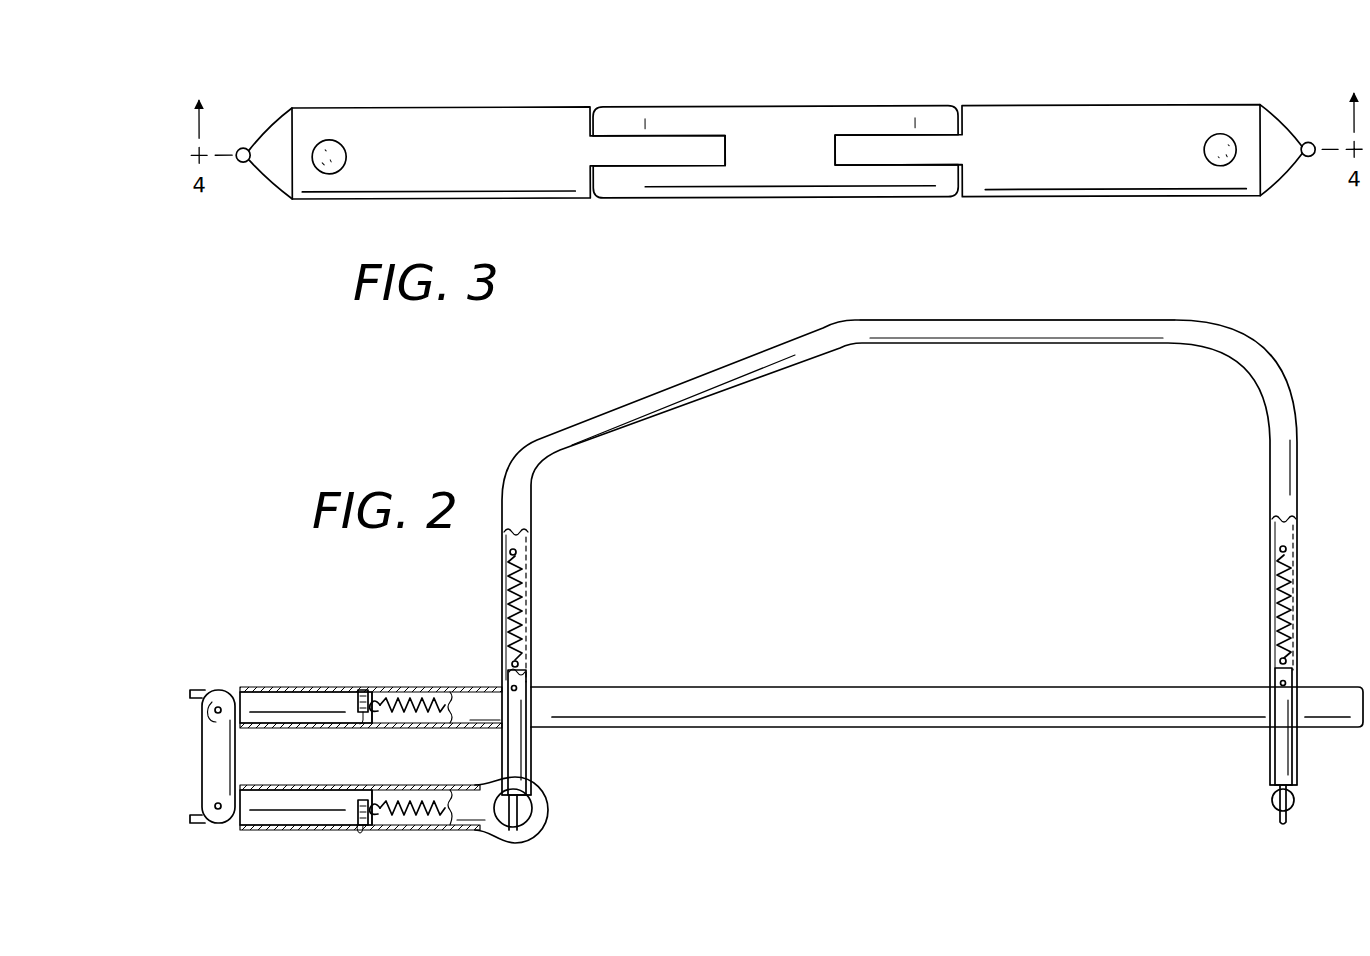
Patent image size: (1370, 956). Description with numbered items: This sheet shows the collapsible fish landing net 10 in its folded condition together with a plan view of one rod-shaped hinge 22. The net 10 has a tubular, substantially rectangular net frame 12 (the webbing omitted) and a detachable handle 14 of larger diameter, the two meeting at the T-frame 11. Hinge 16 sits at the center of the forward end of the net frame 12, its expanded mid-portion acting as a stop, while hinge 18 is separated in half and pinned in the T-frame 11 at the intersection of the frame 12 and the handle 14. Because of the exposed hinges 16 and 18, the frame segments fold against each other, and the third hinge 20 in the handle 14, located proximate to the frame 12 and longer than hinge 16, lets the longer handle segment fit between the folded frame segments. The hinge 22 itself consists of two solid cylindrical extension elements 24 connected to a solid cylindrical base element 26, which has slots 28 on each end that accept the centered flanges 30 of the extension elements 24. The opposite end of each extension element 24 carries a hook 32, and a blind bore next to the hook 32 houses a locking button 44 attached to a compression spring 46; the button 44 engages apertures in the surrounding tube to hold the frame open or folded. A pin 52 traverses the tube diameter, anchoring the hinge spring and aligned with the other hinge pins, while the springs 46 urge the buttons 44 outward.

In FIG. 2, the fish landing net 10 is at (520, 440).
In FIG. 2, the T-frame 11 is at (537, 808).
In FIG. 2, the net frame 12 is at (1000, 306).
In FIG. 2, the handle 14 is at (870, 698).
In FIG. 2, the hinge 16 is at (1310, 766).
In FIG. 2, the hinge 18 is at (550, 782).
In FIG. 2, the hinge 20 is at (242, 757).
In FIG. 3, the rod-shaped hinge 22 is at (838, 56).
In FIG. 3, the extension element 24 is at (445, 107).
In FIG. 2, the extension element 24 is at (518, 757).
In FIG. 3, the base element 26 is at (765, 107).
In FIG. 2, the base element 26 is at (220, 690).
In FIG. 3, the slot 28 is at (729, 148).
In FIG. 3, the centered flange 30 is at (634, 152).
In FIG. 3, the hook 32 is at (240, 149).
In FIG. 2, the hook 32 is at (388, 710).
In FIG. 3, the locking button 44 is at (329, 141).
In FIG. 2, the locking button 44 is at (363, 690).
In FIG. 2, the compression spring 46 is at (527, 607).
In FIG. 2, the pin 52 is at (522, 548).